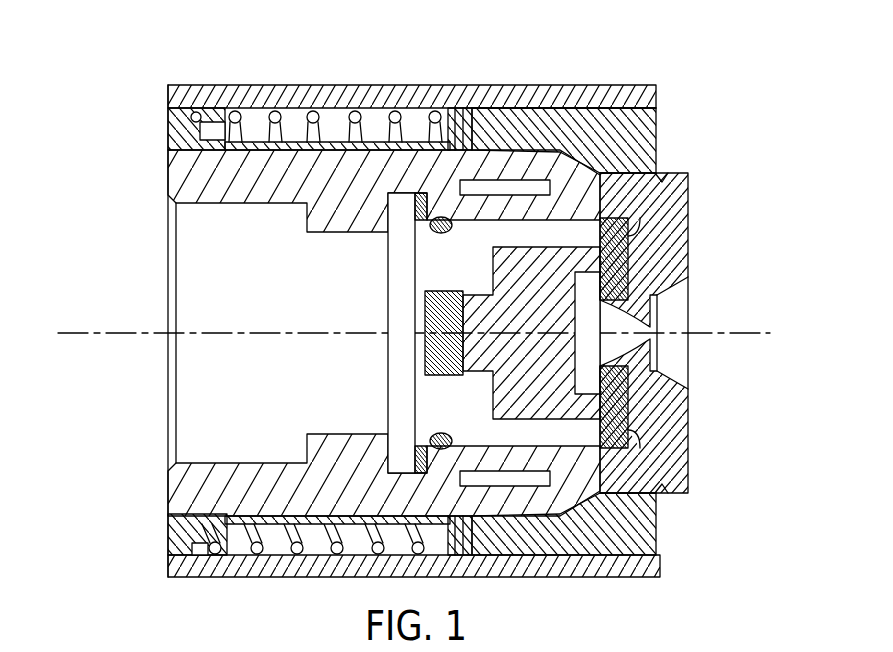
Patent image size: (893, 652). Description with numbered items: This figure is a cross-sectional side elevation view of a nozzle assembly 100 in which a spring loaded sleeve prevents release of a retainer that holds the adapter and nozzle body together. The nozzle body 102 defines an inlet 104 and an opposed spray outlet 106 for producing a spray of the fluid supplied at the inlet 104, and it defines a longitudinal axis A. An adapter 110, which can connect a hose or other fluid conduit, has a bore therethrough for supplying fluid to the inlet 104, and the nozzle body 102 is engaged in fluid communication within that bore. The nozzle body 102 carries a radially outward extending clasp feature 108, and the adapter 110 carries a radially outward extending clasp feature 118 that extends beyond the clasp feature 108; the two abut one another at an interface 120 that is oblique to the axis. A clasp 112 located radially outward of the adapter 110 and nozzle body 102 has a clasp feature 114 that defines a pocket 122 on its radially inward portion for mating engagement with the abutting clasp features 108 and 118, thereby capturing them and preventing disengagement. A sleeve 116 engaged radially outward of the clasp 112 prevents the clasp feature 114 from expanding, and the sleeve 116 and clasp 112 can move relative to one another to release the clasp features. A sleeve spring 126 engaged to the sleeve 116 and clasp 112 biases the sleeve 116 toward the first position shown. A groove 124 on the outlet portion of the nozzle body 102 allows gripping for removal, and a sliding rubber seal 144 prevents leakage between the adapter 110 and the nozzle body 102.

The nozzle assembly 100 is at (672, 66).
The nozzle body 102 is at (692, 218).
The inlet 104 is at (372, 357).
The spray outlet 106 is at (710, 303).
The clasp feature 108 is at (653, 130).
The adapter 110 is at (167, 168).
The clasp 112 is at (652, 145).
The clasp feature 114 is at (577, 108).
The sleeve 116 is at (318, 97).
The clasp feature 118 is at (517, 112).
The interface 120 is at (560, 170).
The pocket 122 is at (595, 140).
The groove 124 is at (665, 173).
The sleeve spring 126 is at (246, 90).
The sliding rubber seal 144 is at (445, 446).